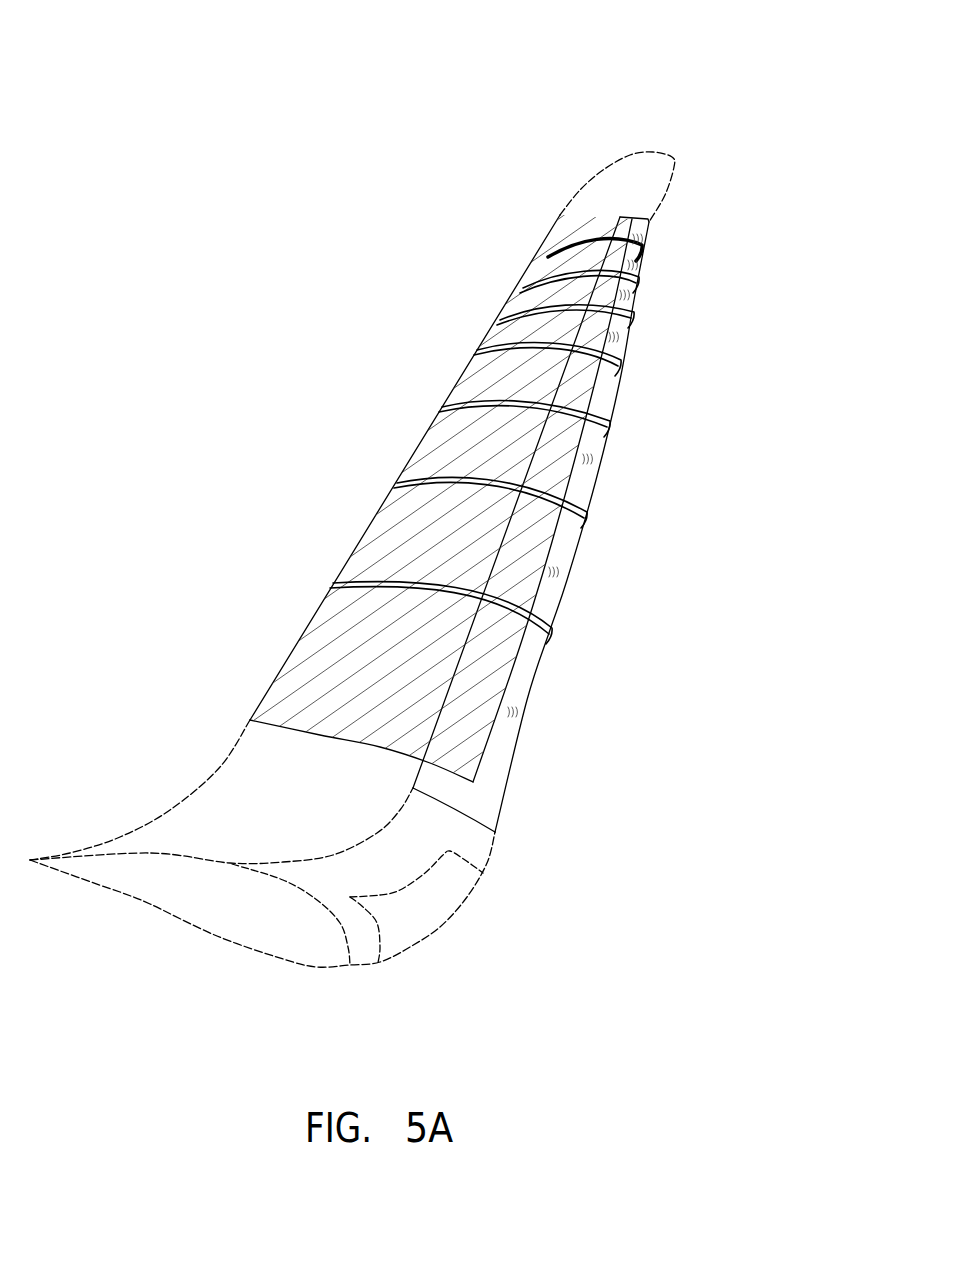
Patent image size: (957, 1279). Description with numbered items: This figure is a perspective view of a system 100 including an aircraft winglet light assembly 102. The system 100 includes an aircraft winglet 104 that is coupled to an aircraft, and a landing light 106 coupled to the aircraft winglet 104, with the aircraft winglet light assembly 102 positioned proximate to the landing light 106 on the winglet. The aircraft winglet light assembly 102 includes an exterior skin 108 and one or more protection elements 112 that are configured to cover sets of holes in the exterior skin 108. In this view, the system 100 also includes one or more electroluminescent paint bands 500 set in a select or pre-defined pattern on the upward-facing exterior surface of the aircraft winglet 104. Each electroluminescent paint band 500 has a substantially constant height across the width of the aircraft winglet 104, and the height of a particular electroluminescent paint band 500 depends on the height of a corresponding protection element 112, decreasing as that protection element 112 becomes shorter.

The system 100 is at (240, 105).
The aircraft winglet light assembly 102 is at (672, 592).
The aircraft winglet 104 is at (250, 780).
The landing light 106 is at (452, 905).
The exterior skin 108 is at (632, 213).
The protection element 112 is at (642, 277).
The electroluminescent paint band 500 is at (532, 273).